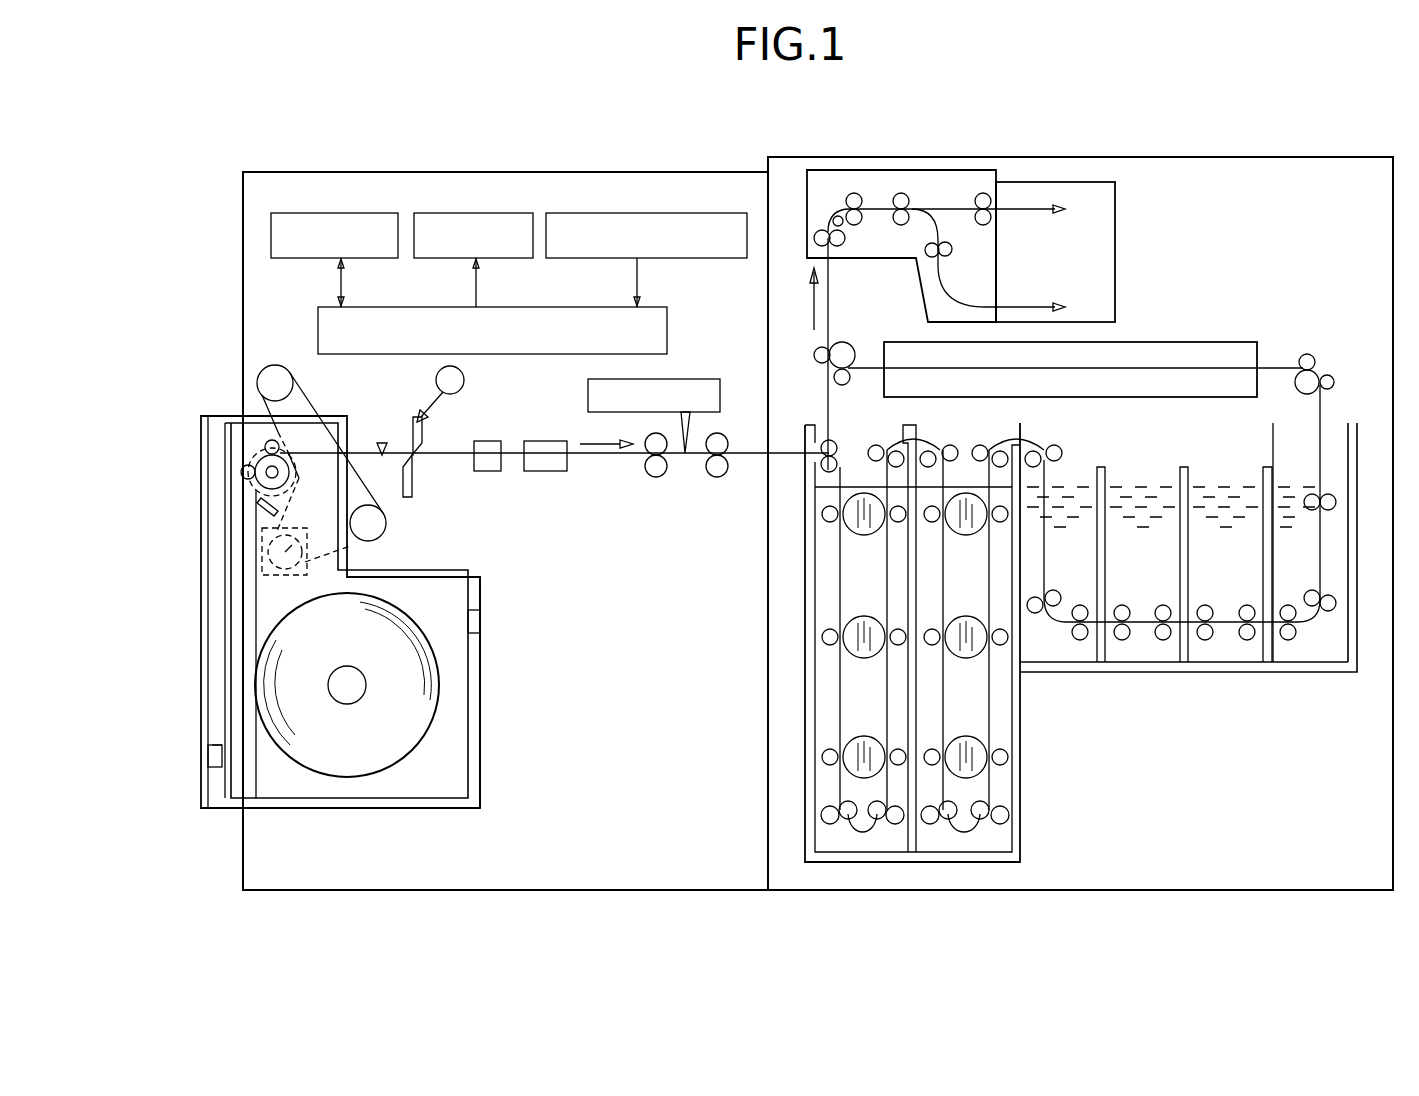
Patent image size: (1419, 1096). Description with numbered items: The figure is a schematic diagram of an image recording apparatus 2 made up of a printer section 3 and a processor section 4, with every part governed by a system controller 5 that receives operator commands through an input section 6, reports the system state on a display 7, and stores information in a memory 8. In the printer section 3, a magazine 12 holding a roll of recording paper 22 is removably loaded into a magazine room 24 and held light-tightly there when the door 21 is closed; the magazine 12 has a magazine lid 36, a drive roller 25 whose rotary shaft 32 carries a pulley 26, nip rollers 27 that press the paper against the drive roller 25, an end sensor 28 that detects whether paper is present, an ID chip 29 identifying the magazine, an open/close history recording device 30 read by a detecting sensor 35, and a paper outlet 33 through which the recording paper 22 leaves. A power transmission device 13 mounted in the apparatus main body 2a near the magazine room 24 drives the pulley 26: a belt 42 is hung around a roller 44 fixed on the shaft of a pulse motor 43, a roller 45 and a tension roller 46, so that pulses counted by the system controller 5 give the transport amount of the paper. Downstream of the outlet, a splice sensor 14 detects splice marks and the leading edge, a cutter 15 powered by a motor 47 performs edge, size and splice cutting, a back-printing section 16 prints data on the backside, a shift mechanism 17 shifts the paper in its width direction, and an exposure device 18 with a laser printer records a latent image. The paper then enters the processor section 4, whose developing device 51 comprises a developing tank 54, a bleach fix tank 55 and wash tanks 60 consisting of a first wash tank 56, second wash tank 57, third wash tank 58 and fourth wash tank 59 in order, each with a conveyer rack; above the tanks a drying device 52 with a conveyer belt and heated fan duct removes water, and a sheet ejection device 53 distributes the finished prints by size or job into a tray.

The image recording apparatus 2 is at (204, 146).
The image recording apparatus main body 2a is at (509, 233).
The printer section 3 is at (563, 167).
The processor section 4 is at (1134, 138).
The system controller 5 is at (660, 307).
The input section 6 is at (584, 213).
The display 7 is at (458, 213).
The memory 8 is at (352, 213).
The magazine 12 is at (486, 786).
The power transmission device 13 is at (255, 372).
The splice sensor 14 is at (383, 441).
The cutter 15 is at (413, 480).
The back-printing section 16 is at (487, 471).
The shift mechanism 17 is at (545, 471).
The exposure device 18 is at (700, 379).
The door 21 is at (201, 655).
The recording paper 22 is at (402, 777).
The magazine room 24 is at (482, 722).
The drive roller 25 is at (282, 492).
The pulley 26 is at (300, 466).
The nip rollers 27 is at (266, 446).
The end sensor 28 is at (257, 514).
The ID chip 29 is at (482, 618).
The open/close history recording device 30 is at (210, 760).
The rotary shaft 32 is at (256, 500).
The paper outlet 33 is at (343, 450).
The detecting sensor 35 is at (212, 744).
The magazine lid 36 is at (228, 695).
The belt 42 is at (265, 408).
The pulse motor 43 is at (273, 576).
The roller 44 is at (260, 577).
The roller 45 is at (276, 380).
The tension roller 46 is at (387, 524).
The motor 47 is at (465, 383).
The developing device 51 is at (1123, 818).
The drying device 52 is at (1200, 345).
The sheet ejection device 53 is at (905, 180).
The developing tank 54 is at (823, 683).
The bleach fix tank 55 is at (1006, 790).
The first wash tank 56 is at (1070, 650).
The second wash tank 57 is at (1140, 653).
The third wash tank 58 is at (1235, 652).
The fourth wash tank 59 is at (1288, 593).
The wash tanks 60 is at (1188, 619).